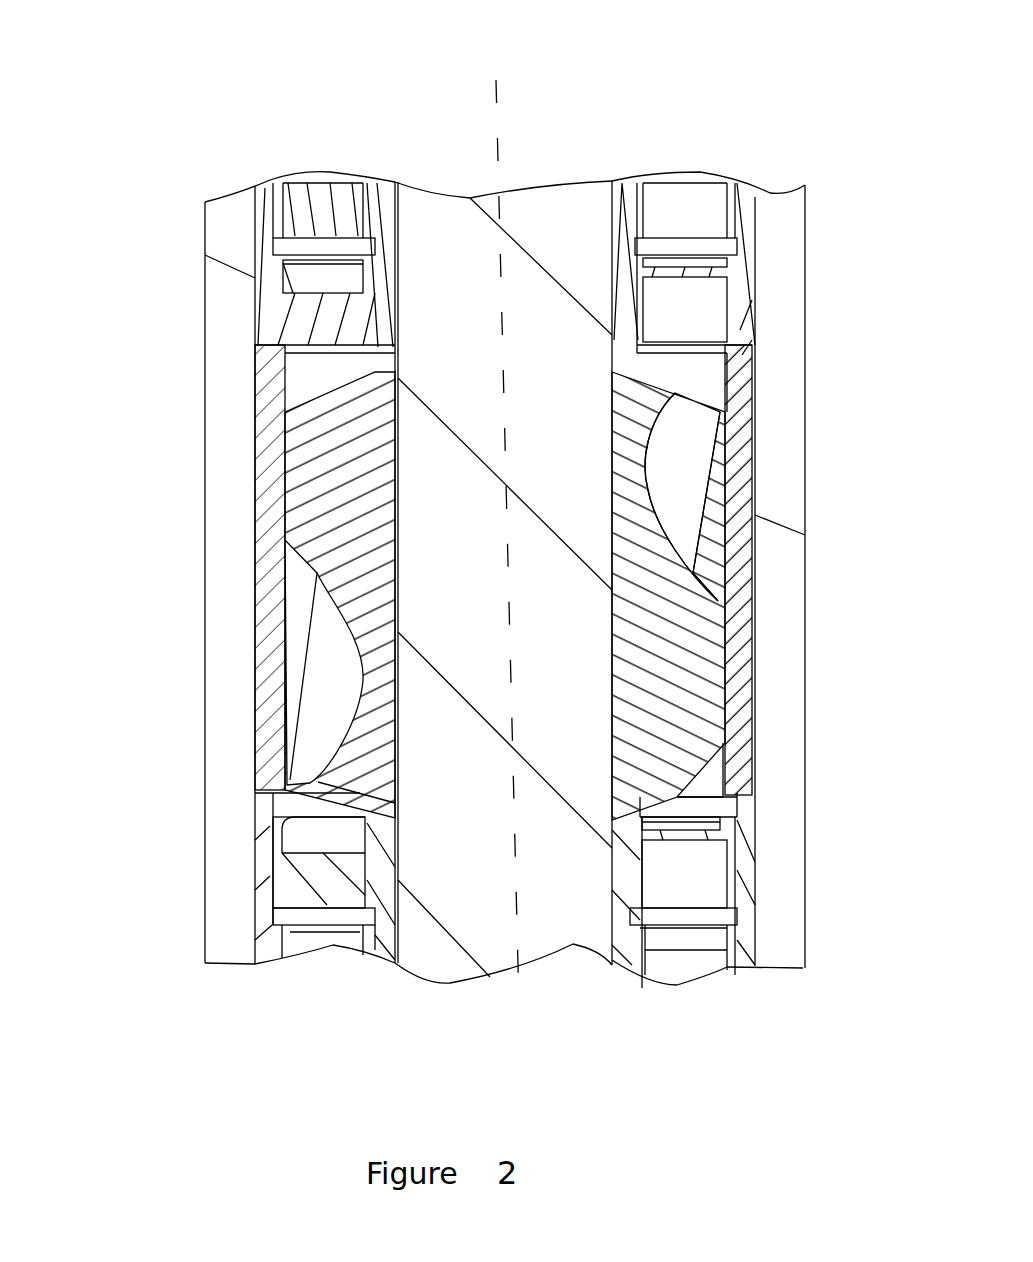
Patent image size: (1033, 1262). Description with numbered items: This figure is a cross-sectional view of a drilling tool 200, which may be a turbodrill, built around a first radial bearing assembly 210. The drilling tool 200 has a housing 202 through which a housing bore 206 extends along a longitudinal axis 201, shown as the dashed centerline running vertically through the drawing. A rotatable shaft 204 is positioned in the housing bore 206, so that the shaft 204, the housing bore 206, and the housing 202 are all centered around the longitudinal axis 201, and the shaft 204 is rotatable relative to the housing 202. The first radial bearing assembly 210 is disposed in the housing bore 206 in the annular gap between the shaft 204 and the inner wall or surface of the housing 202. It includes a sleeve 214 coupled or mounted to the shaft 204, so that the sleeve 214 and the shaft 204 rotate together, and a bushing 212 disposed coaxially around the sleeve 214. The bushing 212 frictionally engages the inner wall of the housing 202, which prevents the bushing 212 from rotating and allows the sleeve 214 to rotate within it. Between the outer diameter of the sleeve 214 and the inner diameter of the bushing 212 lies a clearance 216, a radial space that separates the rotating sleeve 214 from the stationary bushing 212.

The drilling tool 200 is at (88, 43).
The longitudinal axis 201 is at (518, 528).
The housing 202 is at (222, 295).
The rotatable shaft 204 is at (427, 963).
The housing bore 206 is at (295, 165).
The first radial bearing assembly 210 is at (178, 820).
The bushing 212 is at (742, 395).
The sleeve 214 is at (702, 735).
The clearance 216 is at (722, 603).